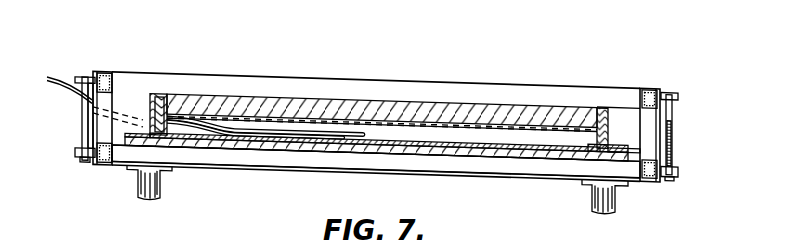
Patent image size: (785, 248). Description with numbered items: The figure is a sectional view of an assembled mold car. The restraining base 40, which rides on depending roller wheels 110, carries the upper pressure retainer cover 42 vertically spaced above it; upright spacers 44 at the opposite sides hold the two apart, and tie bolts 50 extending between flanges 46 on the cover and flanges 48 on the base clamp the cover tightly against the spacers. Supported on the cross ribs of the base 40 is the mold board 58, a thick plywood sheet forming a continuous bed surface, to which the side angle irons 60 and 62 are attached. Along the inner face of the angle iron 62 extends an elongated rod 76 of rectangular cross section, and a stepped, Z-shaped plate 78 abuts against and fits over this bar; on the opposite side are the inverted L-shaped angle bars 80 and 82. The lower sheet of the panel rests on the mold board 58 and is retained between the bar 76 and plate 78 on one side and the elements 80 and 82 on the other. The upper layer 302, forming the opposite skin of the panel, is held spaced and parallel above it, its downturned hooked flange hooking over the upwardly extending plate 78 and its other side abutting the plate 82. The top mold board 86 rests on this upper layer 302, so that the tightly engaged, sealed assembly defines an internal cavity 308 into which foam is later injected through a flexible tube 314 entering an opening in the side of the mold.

The flexible tube 314 is at (60, 74).
The flanges 46 is at (88, 73).
The upright spacers 44 is at (100, 118).
The tie bolts 50 is at (78, 130).
The flanges 48 is at (88, 157).
The angle iron 60 is at (135, 132).
The roller wheels 110 is at (150, 198).
The angle bar 80 is at (147, 92).
The angle bar 82 is at (162, 92).
The pressure cover hold-down element 42 is at (225, 78).
The top mold board 86 is at (283, 98).
The upper layer 302 is at (408, 105).
The internal cavity 308 is at (482, 122).
The mold board 58 is at (367, 140).
The base 40 is at (477, 152).
The stepped plate 78 is at (590, 132).
The angle iron 62 is at (606, 111).
The elongated rod 76 is at (622, 136).